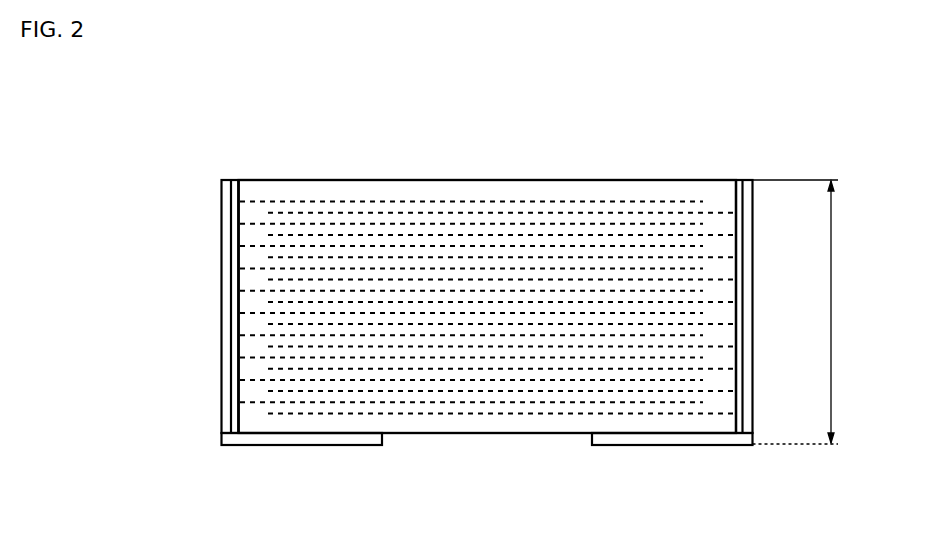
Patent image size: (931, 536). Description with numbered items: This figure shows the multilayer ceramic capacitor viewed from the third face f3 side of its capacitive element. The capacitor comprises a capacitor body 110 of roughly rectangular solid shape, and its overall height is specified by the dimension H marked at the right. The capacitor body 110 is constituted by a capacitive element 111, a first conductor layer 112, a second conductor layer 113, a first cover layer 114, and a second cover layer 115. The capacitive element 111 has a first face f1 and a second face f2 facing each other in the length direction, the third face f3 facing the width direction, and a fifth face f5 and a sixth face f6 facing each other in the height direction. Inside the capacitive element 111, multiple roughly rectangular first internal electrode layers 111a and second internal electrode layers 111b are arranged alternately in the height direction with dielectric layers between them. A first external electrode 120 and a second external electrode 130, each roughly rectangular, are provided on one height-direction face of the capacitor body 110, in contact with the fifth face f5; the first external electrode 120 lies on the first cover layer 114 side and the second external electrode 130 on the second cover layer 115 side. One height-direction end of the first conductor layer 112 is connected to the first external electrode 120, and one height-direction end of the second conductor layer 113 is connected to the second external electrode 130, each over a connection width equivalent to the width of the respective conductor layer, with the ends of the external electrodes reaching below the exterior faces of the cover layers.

The capacitor body 110 is at (228, 179).
The capacitive element 111 is at (478, 180).
The first internal electrode layers 111a is at (582, 201).
The second internal electrode layers 111b is at (655, 210).
The first conductor layer 112 is at (232, 253).
The second conductor layer 113 is at (740, 246).
The first cover layer 114 is at (226, 288).
The second cover layer 115 is at (747, 289).
The first external electrode 120 is at (316, 441).
The second external electrode 130 is at (657, 441).
The first face f1 is at (240, 195).
The second face f2 is at (735, 183).
The third face f3 is at (437, 248).
The fifth face f5 is at (525, 437).
The sixth face f6 is at (524, 180).
The height H is at (801, 312).